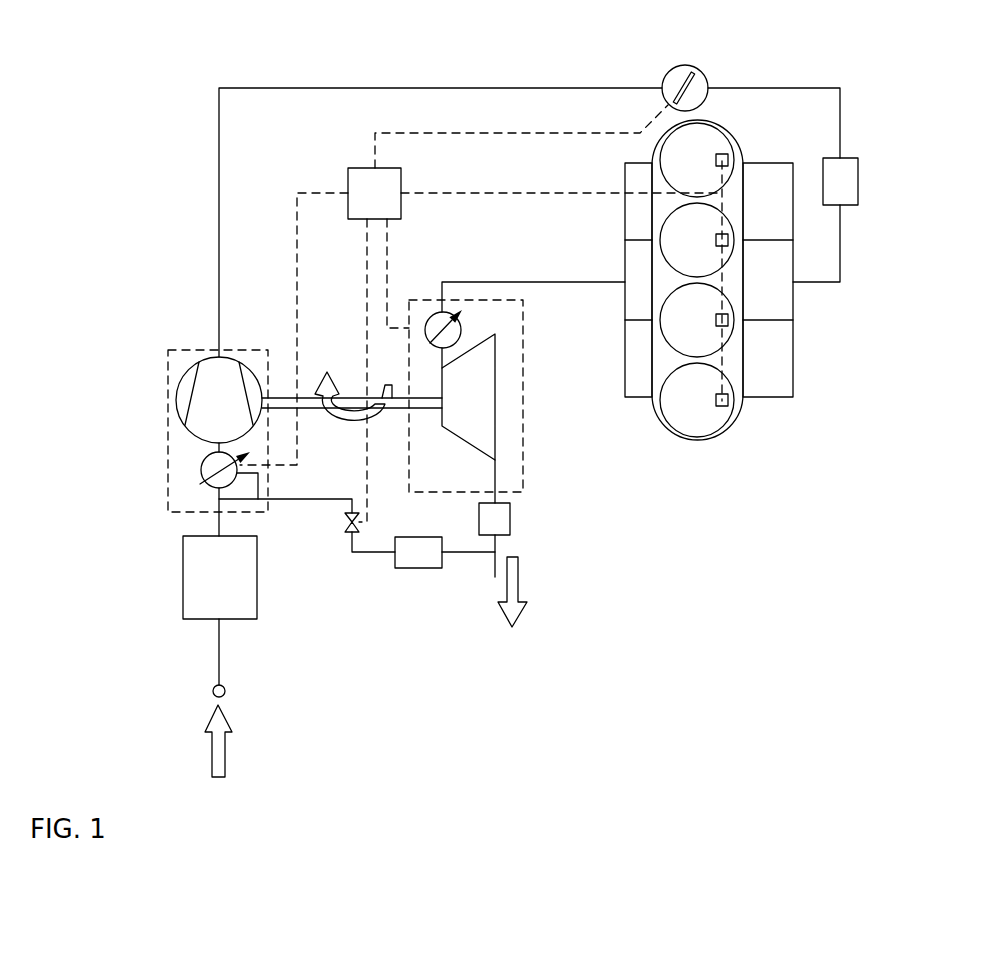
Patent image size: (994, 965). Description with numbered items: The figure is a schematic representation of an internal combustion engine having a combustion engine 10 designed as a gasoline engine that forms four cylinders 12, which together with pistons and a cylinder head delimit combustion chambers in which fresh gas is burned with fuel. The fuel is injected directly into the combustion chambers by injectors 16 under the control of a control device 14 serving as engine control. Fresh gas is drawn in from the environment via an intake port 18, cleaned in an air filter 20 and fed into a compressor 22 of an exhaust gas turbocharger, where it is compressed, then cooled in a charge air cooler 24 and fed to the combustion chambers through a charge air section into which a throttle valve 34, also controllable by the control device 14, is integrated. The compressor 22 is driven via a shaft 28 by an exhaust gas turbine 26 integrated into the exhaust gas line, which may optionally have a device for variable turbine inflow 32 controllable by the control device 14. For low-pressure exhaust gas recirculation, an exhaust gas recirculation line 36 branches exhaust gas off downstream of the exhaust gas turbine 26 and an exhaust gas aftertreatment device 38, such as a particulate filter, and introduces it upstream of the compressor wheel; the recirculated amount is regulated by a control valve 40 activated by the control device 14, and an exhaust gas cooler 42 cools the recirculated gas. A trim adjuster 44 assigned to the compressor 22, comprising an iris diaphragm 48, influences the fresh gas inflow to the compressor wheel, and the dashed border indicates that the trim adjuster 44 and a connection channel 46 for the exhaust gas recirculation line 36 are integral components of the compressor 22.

The combustion engine 10 is at (740, 454).
The cylinders 12 is at (683, 177).
The control device 14 is at (368, 185).
The injectors 16 is at (830, 430).
The intake port 18 is at (214, 698).
The air filter 20 is at (200, 581).
The compressor 22 is at (205, 397).
The charge air cooler 24 is at (847, 168).
The exhaust gas turbine 26 is at (438, 492).
The shaft 28 is at (286, 402).
The device for variable turbine inflow 32 is at (407, 308).
The throttle valve 34 is at (675, 77).
The exhaust gas recirculation line 36 is at (380, 569).
The exhaust gas aftertreatment device 38 is at (501, 517).
The control valve 40 is at (347, 537).
The exhaust gas cooler 42 is at (420, 568).
The trim adjuster 44 is at (173, 463).
The connection channel 46 is at (253, 515).
The iris diaphragm 48 is at (274, 483).